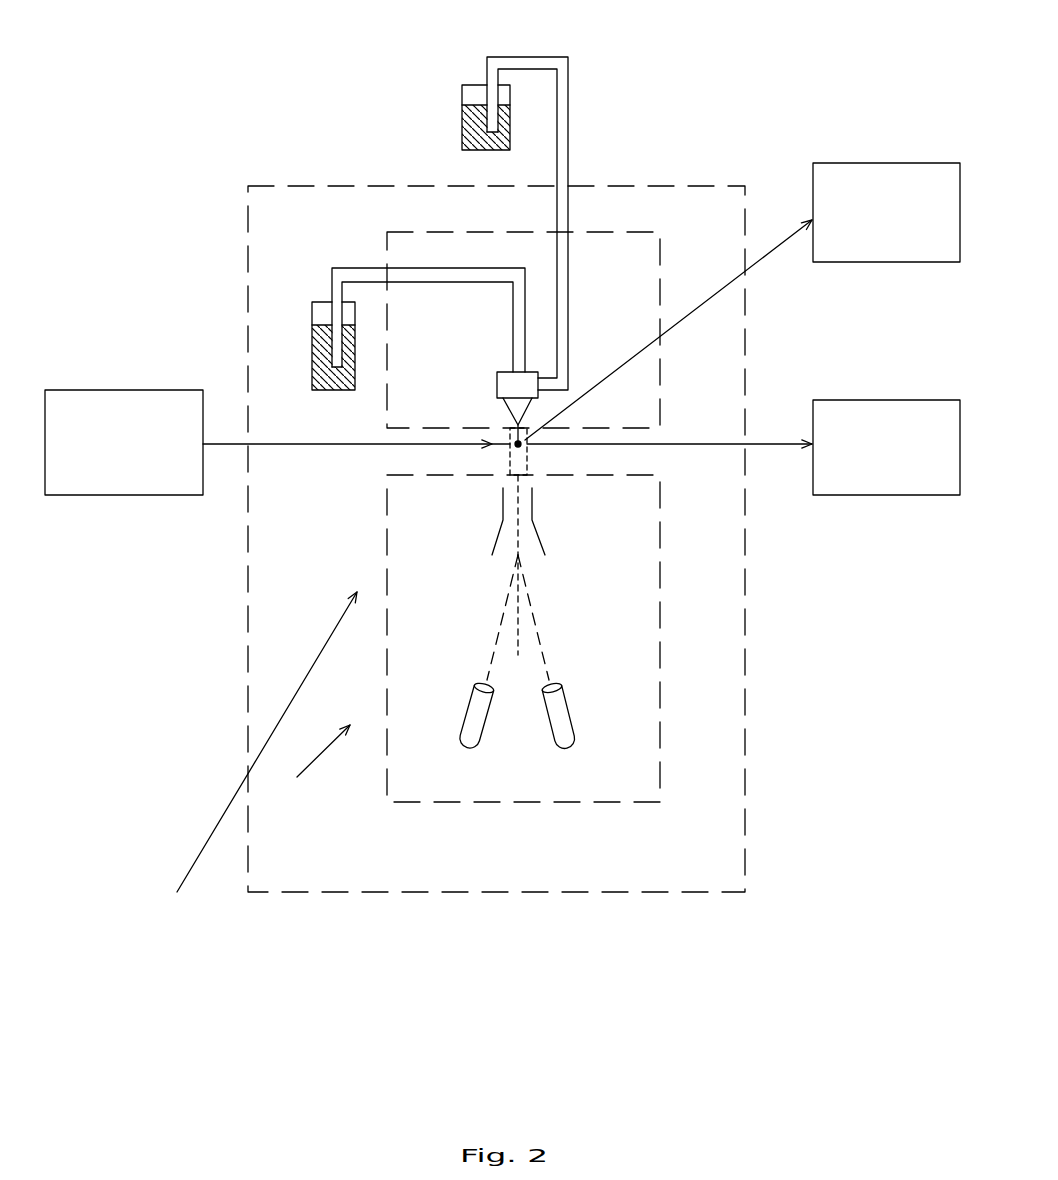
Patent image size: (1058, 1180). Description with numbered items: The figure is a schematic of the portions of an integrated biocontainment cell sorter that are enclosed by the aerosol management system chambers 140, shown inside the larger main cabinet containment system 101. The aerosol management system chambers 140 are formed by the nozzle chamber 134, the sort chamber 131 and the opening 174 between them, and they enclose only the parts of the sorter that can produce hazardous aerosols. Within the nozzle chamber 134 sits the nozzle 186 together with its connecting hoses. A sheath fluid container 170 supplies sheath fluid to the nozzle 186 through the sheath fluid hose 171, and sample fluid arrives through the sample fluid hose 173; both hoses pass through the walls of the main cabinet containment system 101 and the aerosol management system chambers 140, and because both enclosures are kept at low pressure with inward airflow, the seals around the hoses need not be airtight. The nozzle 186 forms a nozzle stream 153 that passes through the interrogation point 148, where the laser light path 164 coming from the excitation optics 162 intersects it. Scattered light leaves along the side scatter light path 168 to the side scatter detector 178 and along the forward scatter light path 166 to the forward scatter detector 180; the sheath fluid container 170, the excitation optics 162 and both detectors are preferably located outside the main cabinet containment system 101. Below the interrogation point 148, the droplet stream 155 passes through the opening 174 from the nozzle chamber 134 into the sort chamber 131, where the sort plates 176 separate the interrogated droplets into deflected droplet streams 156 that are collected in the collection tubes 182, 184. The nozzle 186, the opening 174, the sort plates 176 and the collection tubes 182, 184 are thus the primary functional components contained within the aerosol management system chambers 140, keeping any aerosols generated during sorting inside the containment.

The main cabinet containment system 101 is at (248, 200).
The sheath fluid container 170 is at (462, 130).
The sheath fluid hose 171 is at (568, 90).
The side scatter light path 168 is at (700, 303).
The side scatter detector 178 is at (882, 163).
The forward scatter detector 180 is at (885, 400).
The excitation optics 162 is at (103, 390).
The opening 174 is at (312, 360).
The sample fluid hose 173 is at (365, 268).
The nozzle chamber 134 is at (460, 366).
The nozzle 186 is at (524, 372).
The nozzle stream 153 is at (513, 425).
The interrogation point 148 is at (527, 443).
The light path 164 is at (325, 445).
The forward scatter light path 166 is at (698, 445).
The droplet stream 155 is at (505, 497).
The sort plates 176 is at (537, 505).
The deflected droplet streams 156 is at (540, 603).
The sort chamber 131 is at (418, 663).
The collection tube 182 is at (470, 755).
The collection tube 184 is at (567, 697).
The aerosol management system chambers 140 is at (218, 797).